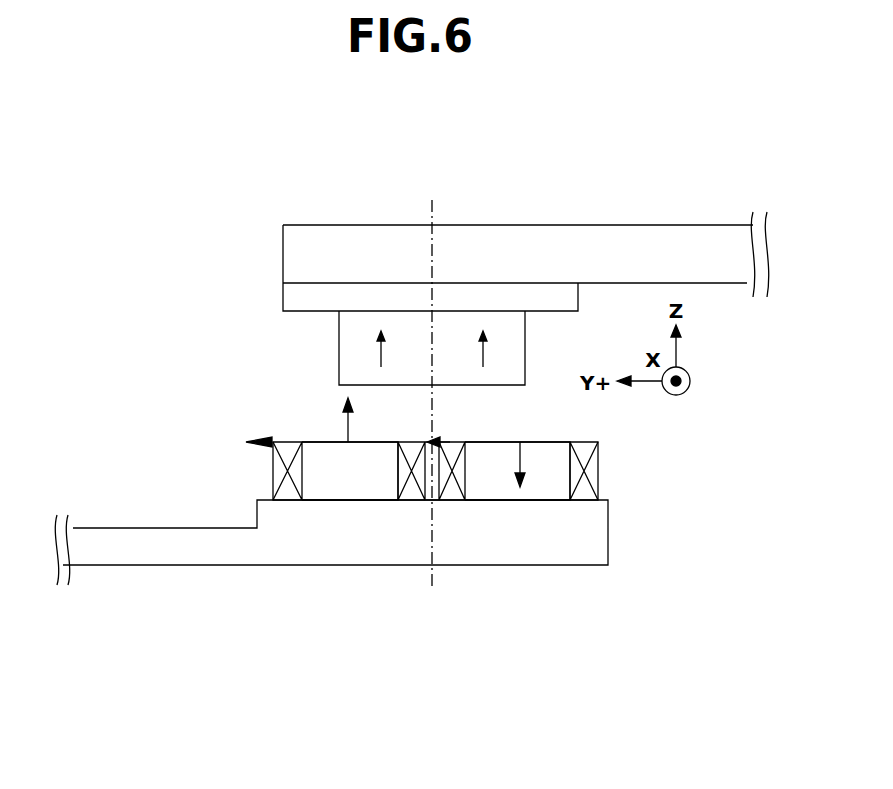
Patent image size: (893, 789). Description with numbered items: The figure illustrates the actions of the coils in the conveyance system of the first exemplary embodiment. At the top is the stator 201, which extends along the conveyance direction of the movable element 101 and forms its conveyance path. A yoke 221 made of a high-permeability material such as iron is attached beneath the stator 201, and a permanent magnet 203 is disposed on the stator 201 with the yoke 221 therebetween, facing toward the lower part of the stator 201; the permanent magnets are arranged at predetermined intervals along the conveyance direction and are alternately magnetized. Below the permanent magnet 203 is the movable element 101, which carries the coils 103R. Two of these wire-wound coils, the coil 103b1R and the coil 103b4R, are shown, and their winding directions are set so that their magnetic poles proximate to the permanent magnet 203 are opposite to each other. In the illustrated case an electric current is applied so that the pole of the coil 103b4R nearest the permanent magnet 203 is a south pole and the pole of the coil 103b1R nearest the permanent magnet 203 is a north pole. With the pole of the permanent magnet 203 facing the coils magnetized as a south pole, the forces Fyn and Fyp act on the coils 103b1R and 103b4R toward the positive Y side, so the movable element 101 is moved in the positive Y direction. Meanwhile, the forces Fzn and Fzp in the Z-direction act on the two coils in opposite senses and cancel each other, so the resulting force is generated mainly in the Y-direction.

The stator 201 is at (359, 225).
The yoke 221 is at (283, 297).
The permanent magnet 203 is at (339, 351).
The movable element 101 is at (610, 545).
The coils 103R is at (428, 567).
The coil 103b1R is at (322, 488).
The coil 103b4R is at (537, 555).
The force in Z-direction Fzn is at (346, 431).
The force toward positive Y side Fyn is at (262, 447).
The force toward positive Y side Fyp is at (489, 445).
The force in Z-direction Fzp is at (513, 470).